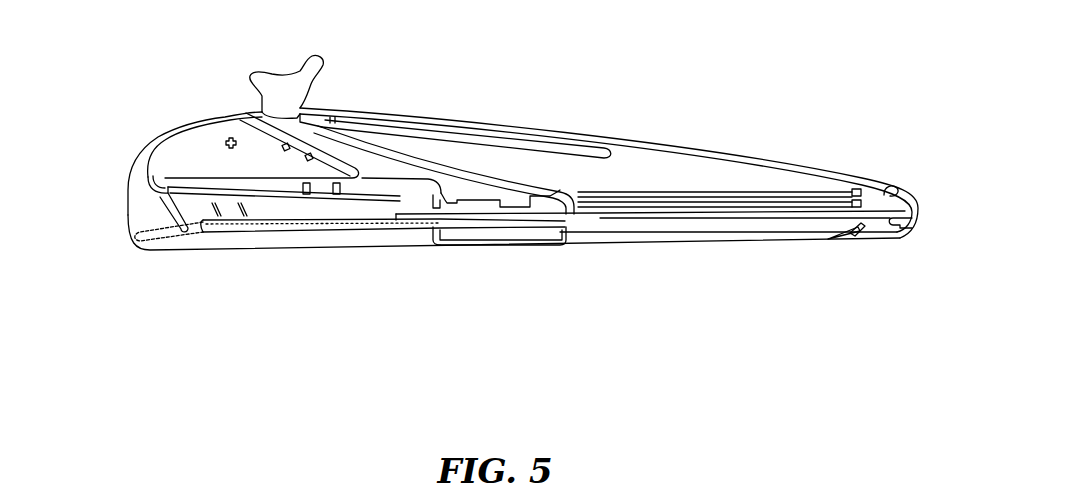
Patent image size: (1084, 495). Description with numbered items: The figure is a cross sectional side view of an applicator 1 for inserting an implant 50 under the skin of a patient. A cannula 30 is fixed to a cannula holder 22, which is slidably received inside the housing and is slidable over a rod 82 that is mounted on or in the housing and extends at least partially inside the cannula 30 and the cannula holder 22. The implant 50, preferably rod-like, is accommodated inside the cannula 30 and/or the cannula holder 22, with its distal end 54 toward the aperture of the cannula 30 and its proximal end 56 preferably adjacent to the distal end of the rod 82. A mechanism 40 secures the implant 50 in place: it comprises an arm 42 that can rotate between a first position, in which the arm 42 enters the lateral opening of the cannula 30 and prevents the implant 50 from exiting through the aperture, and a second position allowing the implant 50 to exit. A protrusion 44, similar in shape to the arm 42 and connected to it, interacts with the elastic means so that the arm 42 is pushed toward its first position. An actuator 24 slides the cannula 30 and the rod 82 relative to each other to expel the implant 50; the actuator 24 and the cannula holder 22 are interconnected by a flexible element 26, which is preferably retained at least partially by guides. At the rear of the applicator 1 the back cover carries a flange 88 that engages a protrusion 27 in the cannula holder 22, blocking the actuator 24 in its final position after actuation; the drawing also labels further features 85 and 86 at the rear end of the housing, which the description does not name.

The applicator 1 is at (571, 86).
The cannula holder 22 is at (548, 210).
The actuator 24 is at (264, 72).
The flexible element 26 is at (375, 137).
The protrusion 27 is at (563, 241).
The cannula 30 is at (424, 223).
The mechanism 40 is at (163, 178).
The arm 42 is at (166, 204).
The protrusion 44 is at (185, 180).
The implant 50 is at (277, 221).
The distal end of the implant 54 is at (208, 232).
The proximal end of the implant 56 is at (404, 222).
The rod 82 is at (757, 219).
The upper hook 85 is at (897, 190).
The lower hook 86 is at (902, 225).
The flange 88 is at (859, 232).